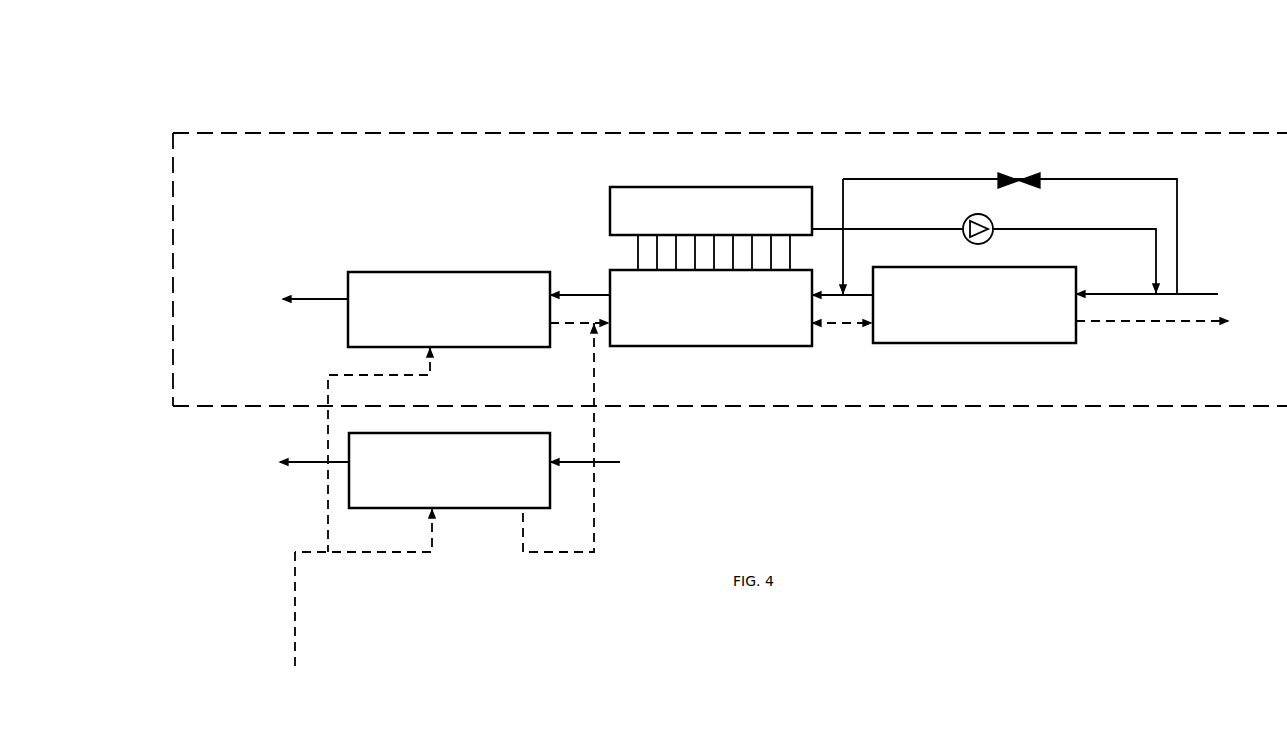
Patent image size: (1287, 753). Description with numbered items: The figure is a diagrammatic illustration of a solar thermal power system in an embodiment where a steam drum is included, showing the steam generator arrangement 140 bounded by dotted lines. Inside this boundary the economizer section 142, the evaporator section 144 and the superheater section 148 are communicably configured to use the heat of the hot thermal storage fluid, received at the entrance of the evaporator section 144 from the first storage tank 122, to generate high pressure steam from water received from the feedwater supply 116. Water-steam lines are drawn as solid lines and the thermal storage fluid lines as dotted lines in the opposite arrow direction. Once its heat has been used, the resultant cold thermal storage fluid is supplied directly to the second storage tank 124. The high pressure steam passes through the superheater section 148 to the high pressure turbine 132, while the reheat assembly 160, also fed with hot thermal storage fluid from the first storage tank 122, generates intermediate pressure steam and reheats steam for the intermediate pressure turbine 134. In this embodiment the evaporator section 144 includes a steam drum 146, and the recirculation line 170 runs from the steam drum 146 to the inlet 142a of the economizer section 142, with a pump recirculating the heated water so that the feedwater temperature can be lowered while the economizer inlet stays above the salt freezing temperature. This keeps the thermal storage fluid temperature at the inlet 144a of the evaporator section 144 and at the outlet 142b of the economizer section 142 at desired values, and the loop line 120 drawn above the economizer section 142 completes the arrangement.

The steam generator arrangement 140 is at (800, 97).
The recycle line with valve 120 is at (920, 173).
The recirculation line 170 is at (1093, 212).
The steam drum 146 is at (705, 198).
The superheater section 148 is at (420, 292).
The evaporator section 144 is at (730, 328).
The inlet of the evaporator section 144a is at (819, 316).
The economizer section 142 is at (950, 328).
The inlet of the economizer section 142a is at (1097, 285).
The outlet of the economizer section 142b is at (842, 313).
The reheat assembly 160 is at (478, 486).
The high pressure turbine 132 is at (296, 299).
The intermediate pressure turbine 134 is at (297, 462).
The feedwater supply 116 is at (1163, 294).
The second storage tank 124 is at (1170, 321).
The first storage tank 122 is at (293, 624).